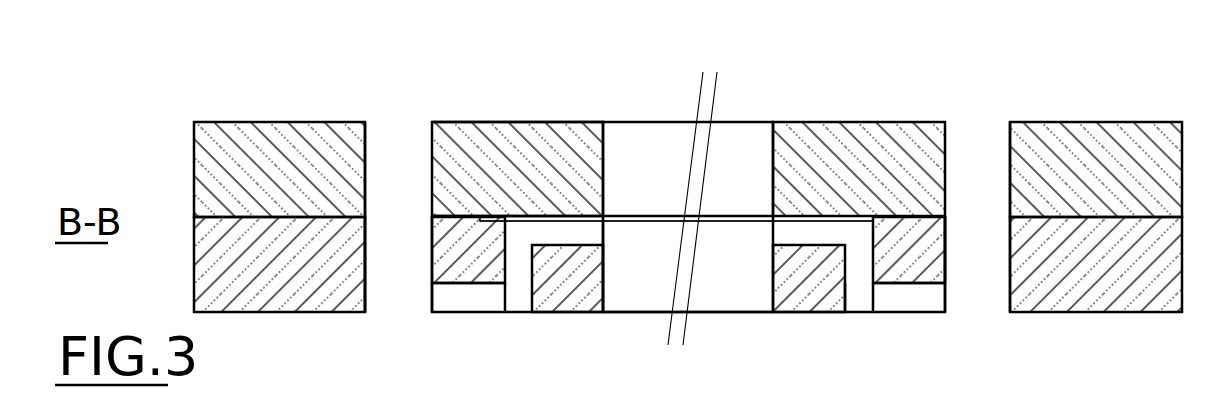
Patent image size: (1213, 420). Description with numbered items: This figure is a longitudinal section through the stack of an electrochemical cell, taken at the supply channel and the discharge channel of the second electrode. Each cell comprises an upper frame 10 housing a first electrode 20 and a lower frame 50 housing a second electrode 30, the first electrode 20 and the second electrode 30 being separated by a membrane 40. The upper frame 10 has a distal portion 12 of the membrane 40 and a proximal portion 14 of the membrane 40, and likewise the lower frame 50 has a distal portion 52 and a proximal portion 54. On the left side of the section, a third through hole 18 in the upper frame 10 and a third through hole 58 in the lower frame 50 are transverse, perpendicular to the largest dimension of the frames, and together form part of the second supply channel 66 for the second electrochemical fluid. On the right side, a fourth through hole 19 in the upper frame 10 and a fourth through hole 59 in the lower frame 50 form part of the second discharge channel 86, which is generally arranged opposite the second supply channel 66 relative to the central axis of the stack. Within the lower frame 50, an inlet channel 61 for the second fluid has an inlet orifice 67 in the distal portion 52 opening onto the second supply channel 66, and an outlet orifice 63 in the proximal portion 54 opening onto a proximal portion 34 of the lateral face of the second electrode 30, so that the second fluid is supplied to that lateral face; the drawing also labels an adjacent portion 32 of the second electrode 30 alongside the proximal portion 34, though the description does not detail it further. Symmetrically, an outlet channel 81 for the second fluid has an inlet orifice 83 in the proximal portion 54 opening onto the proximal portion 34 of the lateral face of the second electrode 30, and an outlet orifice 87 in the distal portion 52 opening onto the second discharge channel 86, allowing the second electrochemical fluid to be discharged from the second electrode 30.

The upper frame 10 is at (276, 153).
The distal portion 12 is at (424, 122).
The proximal portion 14 is at (424, 168).
The third through hole 18 is at (380, 143).
The fourth through hole 19 is at (995, 142).
The first electrode 20 is at (733, 157).
The second electrode 30 is at (730, 290).
The membrane layer 32 is at (614, 262).
The proximal portion of the lateral face 34 is at (614, 222).
The membrane 40 is at (700, 220).
The lower frame 50 is at (267, 285).
The distal portion 52 is at (424, 263).
The proximal portion 54 is at (424, 217).
The third through hole 58 is at (380, 292).
The fourth through hole 59 is at (992, 297).
The inlet channel 61 is at (523, 293).
The outlet orifice 63 is at (606, 248).
The second supply channel 66 is at (400, 114).
The inlet orifice 67 is at (426, 297).
The outlet channel 81 is at (863, 297).
The inlet orifice 83 is at (790, 233).
The second discharge channel 86 is at (977, 151).
The outlet orifice 87 is at (938, 300).